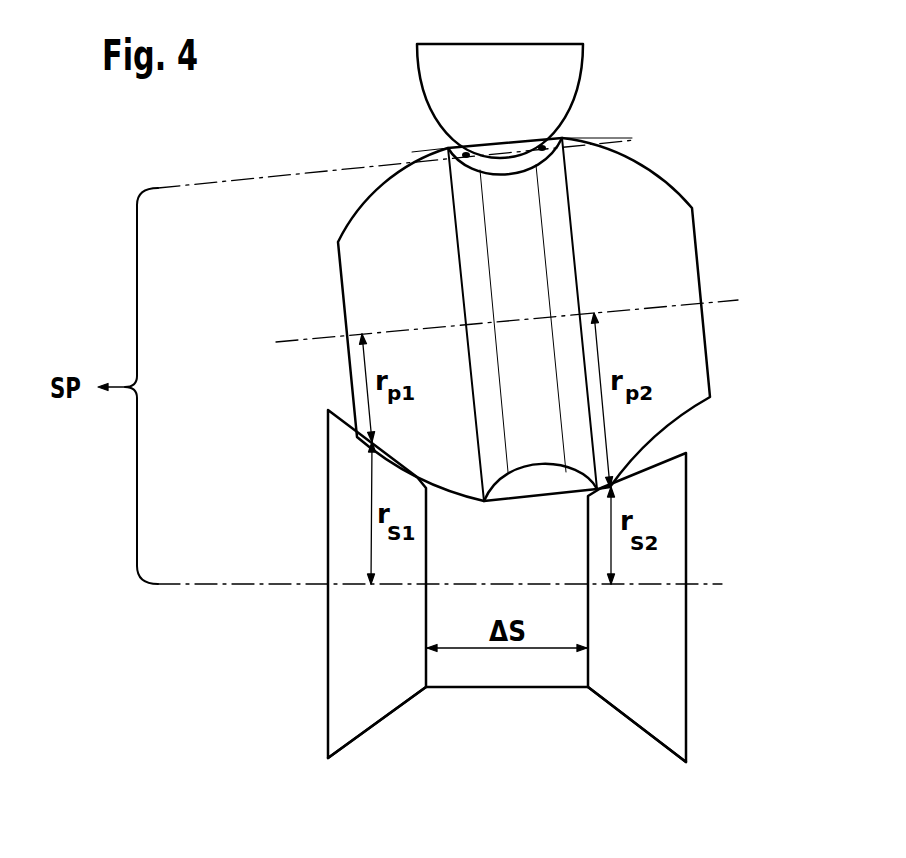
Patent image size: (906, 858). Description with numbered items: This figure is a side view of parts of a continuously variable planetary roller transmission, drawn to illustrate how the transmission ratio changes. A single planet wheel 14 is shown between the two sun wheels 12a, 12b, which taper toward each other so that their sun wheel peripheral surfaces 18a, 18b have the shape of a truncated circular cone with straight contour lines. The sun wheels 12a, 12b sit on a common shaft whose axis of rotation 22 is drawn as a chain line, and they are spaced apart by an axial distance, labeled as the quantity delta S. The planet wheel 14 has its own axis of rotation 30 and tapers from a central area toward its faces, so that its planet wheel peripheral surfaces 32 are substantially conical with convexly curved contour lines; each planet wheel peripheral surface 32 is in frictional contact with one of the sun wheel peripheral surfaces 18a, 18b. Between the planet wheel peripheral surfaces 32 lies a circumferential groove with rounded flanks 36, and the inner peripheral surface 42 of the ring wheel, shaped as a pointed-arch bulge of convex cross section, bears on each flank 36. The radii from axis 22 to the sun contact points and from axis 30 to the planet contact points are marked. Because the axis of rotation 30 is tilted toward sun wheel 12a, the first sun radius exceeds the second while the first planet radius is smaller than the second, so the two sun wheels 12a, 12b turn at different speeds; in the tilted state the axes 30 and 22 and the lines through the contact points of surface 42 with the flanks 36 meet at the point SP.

The sun wheel 12a is at (412, 712).
The sun wheel 12b is at (598, 711).
The planet wheel 14 is at (364, 187).
The sun wheel peripheral surface 18a is at (353, 648).
The sun wheel peripheral surface 18b is at (660, 653).
The axis of rotation 22 is at (231, 578).
The axis of rotation 30 is at (281, 339).
The planet wheel peripheral surface 32 is at (408, 168).
The rounded flank 36 is at (582, 486).
The inner peripheral surface 42 is at (587, 56).